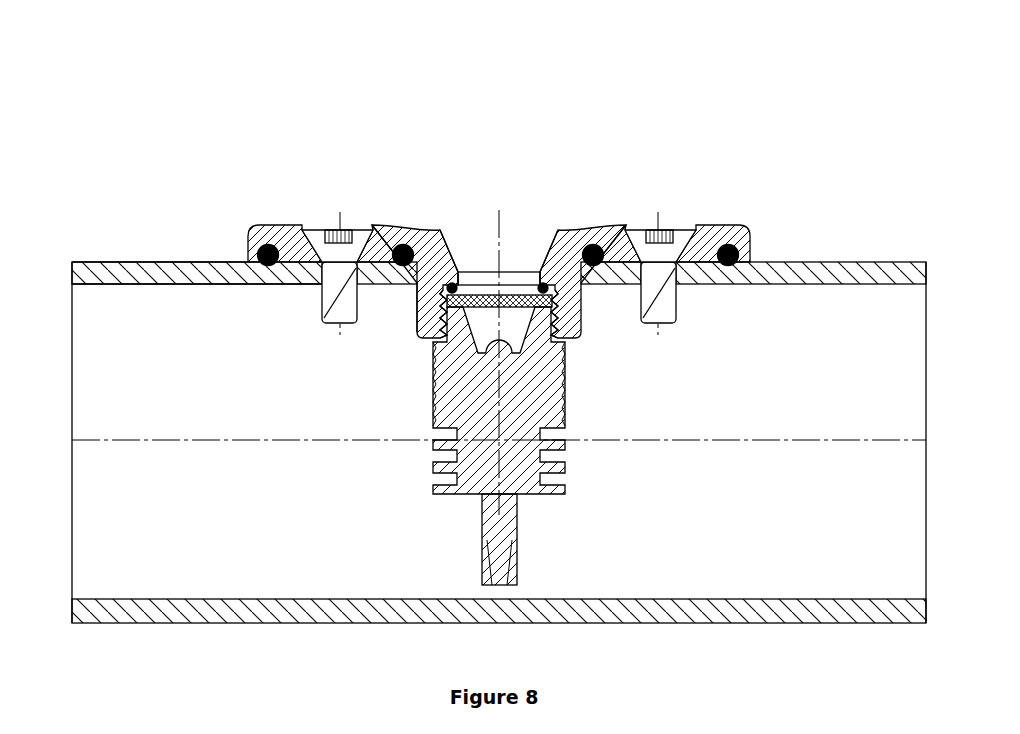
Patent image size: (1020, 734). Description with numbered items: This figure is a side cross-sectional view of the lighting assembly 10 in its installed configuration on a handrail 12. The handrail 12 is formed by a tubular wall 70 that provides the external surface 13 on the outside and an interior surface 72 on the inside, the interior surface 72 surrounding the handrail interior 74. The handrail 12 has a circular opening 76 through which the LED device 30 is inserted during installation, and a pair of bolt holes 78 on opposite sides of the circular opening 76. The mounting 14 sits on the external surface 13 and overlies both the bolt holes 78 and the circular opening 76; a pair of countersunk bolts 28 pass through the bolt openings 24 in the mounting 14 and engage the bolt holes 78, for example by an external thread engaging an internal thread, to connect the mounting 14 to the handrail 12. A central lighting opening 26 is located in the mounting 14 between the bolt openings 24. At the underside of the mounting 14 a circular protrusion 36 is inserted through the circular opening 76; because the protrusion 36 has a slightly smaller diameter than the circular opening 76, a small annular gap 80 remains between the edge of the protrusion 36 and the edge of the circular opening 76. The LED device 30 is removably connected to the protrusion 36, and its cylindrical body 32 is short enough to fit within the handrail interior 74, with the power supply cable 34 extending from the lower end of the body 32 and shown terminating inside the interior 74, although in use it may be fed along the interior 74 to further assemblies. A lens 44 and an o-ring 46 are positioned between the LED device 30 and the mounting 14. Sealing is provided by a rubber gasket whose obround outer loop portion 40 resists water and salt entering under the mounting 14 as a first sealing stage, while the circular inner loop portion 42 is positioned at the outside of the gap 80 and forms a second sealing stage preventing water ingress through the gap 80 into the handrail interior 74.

The lighting assembly 10 is at (542, 297).
The handrail 12 is at (472, 378).
The external surface 13 is at (198, 258).
The mounting 14 is at (518, 229).
The bolt openings 24 is at (525, 169).
The central lighting opening 26 is at (528, 240).
The countersunk bolts 28 is at (362, 242).
The LED device 30 is at (504, 446).
The cylindrical body 32 is at (448, 407).
The power supply cable 34 is at (505, 533).
The circular protrusion 36 is at (592, 333).
The outer loop portion 40 is at (741, 242).
The inner loop portion 42 is at (402, 247).
The lens 44 is at (485, 293).
The o-ring 46 is at (472, 290).
The tubular wall 70 is at (172, 263).
The interior surface 72 is at (110, 290).
The handrail interior 74 is at (150, 544).
The circular opening 76 is at (594, 278).
The bolt holes 78 is at (313, 272).
The annular gap 80 is at (416, 288).